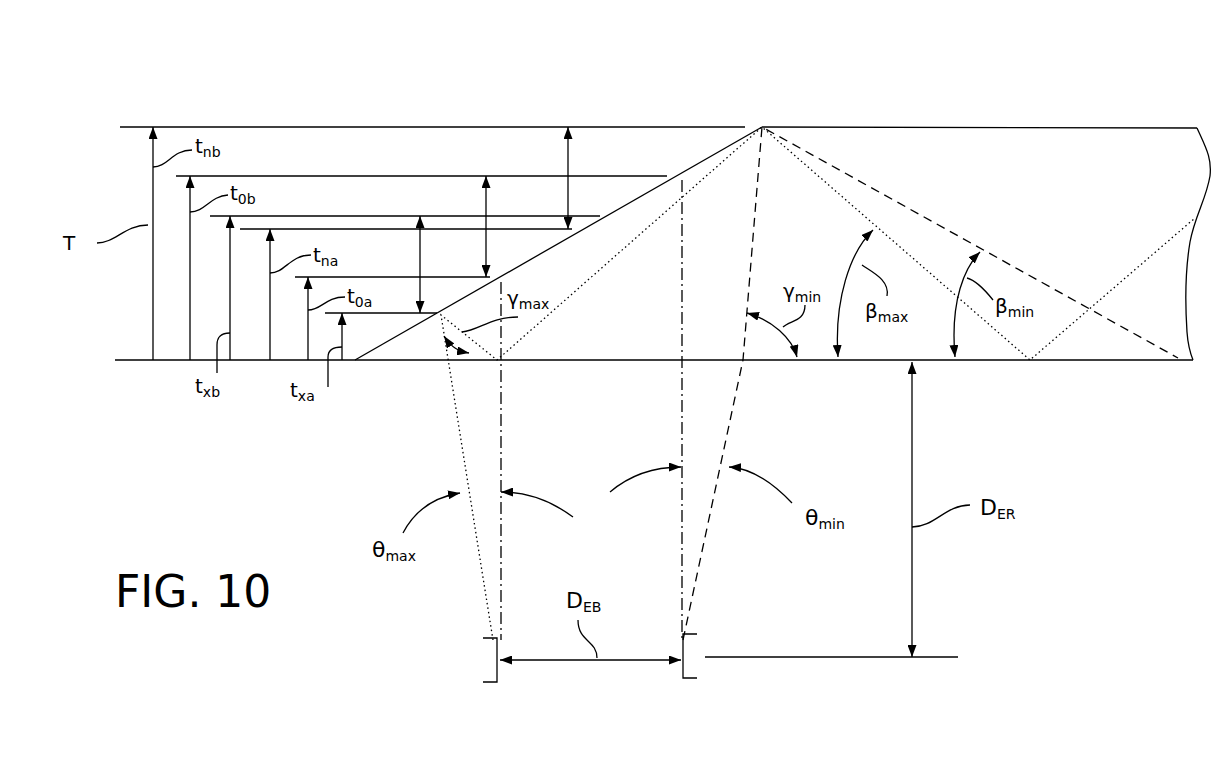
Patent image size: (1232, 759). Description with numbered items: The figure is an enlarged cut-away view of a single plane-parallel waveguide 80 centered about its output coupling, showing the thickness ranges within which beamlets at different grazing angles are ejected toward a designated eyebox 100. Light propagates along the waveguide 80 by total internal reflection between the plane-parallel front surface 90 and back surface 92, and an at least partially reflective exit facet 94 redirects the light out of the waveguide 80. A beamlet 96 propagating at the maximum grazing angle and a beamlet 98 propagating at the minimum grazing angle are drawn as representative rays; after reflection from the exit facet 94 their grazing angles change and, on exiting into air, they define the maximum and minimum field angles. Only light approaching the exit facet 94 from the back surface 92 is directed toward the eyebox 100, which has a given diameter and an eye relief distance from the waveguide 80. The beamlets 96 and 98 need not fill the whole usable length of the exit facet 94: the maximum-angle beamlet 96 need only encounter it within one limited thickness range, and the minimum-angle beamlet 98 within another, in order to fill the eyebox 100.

The plane-parallel waveguide 80 is at (663, 231).
The front surface 90 is at (980, 127).
The back surface 92 is at (1113, 362).
The exit facet 94 is at (607, 218).
The beamlet propagating at the maximum grazing angle 96 is at (452, 422).
The beamlet propagating at the minimum grazing angle 98 is at (933, 223).
The eyebox 100 is at (500, 669).